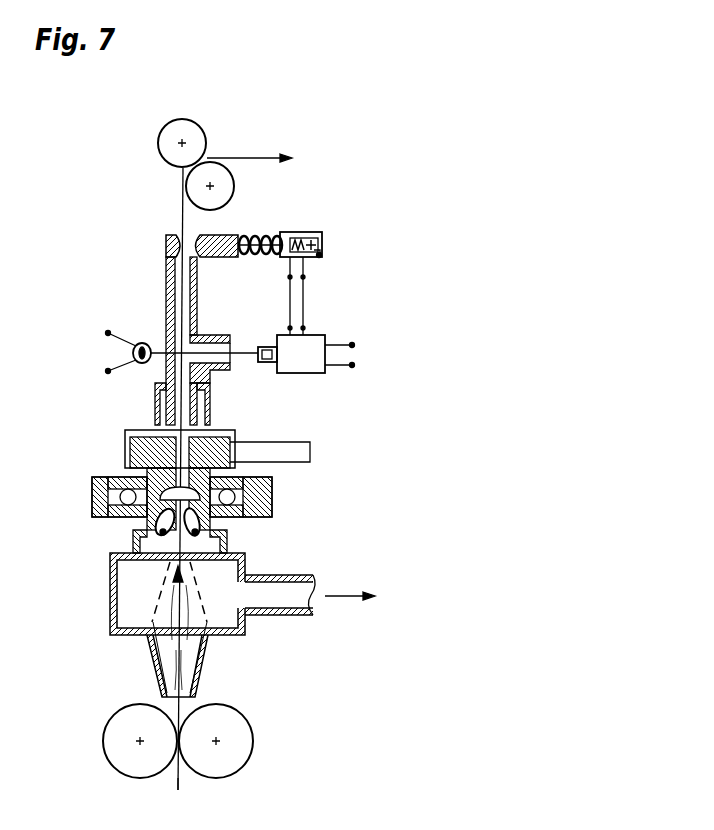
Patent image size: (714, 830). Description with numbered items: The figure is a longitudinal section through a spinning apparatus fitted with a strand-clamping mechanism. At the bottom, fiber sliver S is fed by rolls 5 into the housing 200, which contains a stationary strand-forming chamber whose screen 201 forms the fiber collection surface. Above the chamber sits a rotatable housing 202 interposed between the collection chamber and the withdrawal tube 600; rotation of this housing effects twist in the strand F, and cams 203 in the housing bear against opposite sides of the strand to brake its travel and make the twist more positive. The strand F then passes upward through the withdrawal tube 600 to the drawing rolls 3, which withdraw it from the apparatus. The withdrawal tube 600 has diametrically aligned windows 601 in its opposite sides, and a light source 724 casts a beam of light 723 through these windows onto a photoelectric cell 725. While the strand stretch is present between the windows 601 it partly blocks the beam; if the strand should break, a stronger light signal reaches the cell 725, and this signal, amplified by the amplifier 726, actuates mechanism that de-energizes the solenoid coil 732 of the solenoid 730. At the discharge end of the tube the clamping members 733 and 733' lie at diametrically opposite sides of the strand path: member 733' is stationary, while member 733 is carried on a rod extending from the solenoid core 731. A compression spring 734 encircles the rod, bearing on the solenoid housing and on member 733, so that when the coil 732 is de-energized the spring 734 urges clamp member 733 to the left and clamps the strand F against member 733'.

The drawing rolls 3 is at (190, 128).
The strand F is at (183, 213).
The clamping member 733 is at (243, 215).
The clamping member 733' is at (125, 239).
The compression spring 734 is at (262, 237).
The core 731 is at (322, 240).
The solenoid 730 is at (322, 252).
The solenoid coil 732 is at (320, 255).
The withdrawal tube 600 is at (198, 310).
The beam of light 723 is at (234, 357).
The light source 724 is at (133, 357).
The windows 601 is at (166, 378).
The amplifier 726 is at (325, 340).
The photoelectric cell 725 is at (268, 364).
The rotatable housing 202 is at (237, 468).
The cams 203 is at (207, 533).
The screen 201 is at (162, 592).
The housing 200 is at (203, 653).
The rolls 5 is at (242, 744).
The fiber sliver S is at (178, 788).